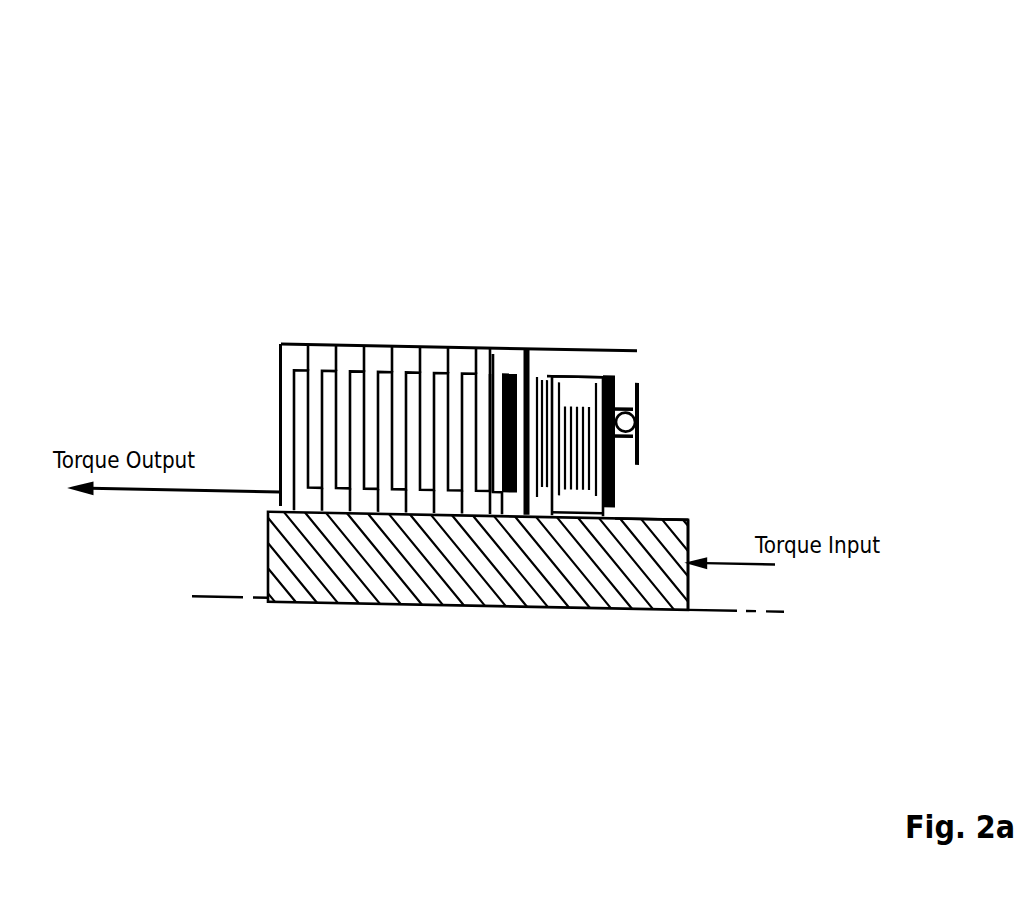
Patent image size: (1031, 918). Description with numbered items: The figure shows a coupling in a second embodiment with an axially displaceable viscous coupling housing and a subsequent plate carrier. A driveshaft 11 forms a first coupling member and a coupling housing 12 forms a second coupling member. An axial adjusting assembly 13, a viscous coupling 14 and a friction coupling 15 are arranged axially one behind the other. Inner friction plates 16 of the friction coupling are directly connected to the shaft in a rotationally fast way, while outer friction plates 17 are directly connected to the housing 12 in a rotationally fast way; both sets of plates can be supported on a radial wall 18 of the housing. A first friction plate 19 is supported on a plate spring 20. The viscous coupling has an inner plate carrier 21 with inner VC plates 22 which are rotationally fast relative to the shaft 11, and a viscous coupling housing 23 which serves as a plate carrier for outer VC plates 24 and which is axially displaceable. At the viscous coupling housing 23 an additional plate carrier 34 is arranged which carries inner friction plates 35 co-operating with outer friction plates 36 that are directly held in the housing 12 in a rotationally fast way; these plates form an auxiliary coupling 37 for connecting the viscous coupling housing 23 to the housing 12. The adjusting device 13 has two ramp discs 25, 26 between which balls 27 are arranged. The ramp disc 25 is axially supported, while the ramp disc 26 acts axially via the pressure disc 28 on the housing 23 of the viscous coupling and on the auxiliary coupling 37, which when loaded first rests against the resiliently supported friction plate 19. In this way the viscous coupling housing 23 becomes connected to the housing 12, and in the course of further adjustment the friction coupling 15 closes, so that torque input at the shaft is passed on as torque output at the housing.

The driveshaft 11 is at (660, 570).
The coupling housing 12 is at (330, 343).
The axial adjusting assembly 13 is at (657, 223).
The viscous coupling 14 is at (625, 150).
The friction coupling 15 is at (387, 210).
The inner friction plates 16 is at (378, 497).
The outer friction plates 17 is at (418, 352).
The radial wall 18 is at (278, 423).
The first friction plate 19 is at (492, 356).
The plate spring 20 is at (502, 372).
The inner plate carrier 21 is at (580, 512).
The inner VC plates 22 is at (620, 535).
The viscous coupling housing 23 is at (577, 373).
The outer VC plates 24 is at (596, 373).
The ramp disc 25 is at (640, 445).
The ramp disc 26 is at (620, 378).
The balls 27 is at (638, 407).
The pressure disc 28 is at (613, 487).
The additional plate carrier 34 is at (547, 512).
The inner friction plates 35 is at (526, 512).
The outer friction plates 36 is at (526, 360).
The auxiliary coupling 37 is at (557, 222).